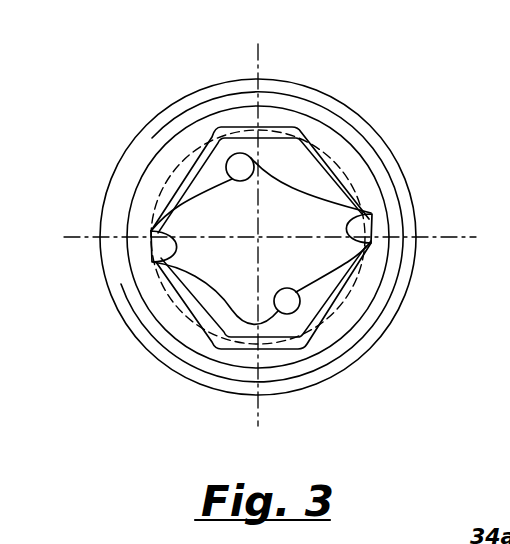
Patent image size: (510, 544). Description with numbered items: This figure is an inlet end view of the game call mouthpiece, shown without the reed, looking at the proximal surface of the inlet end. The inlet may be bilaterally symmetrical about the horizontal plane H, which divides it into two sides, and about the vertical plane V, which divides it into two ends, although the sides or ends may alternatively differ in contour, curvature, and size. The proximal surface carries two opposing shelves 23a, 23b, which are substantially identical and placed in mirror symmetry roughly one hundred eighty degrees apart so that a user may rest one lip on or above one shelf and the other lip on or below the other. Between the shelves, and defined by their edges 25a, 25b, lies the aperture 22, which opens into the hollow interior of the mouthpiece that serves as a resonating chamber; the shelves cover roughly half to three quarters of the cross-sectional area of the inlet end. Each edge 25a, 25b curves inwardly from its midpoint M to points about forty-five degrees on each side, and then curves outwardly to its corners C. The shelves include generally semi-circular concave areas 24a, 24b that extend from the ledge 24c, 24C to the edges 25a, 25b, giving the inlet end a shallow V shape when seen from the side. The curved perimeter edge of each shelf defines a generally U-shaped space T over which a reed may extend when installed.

The aperture 22 is at (268, 232).
The shelf 23a is at (202, 119).
The shelf 23b is at (213, 350).
The concave area 24a is at (312, 187).
The concave area 24b is at (297, 305).
The ledge 24c is at (192, 315).
The ledge 24C is at (317, 154).
The edge 25a is at (232, 181).
The edge 25b is at (275, 294).
The corners C is at (163, 258).
The midpoint M is at (262, 323).
The generally U-shaped space T is at (284, 208).
The horizontal plane H is at (267, 240).
The vertical plane V is at (264, 238).